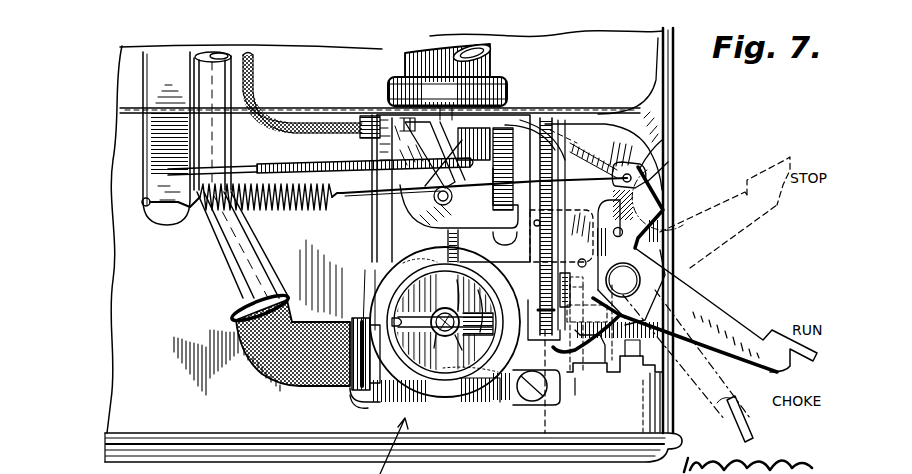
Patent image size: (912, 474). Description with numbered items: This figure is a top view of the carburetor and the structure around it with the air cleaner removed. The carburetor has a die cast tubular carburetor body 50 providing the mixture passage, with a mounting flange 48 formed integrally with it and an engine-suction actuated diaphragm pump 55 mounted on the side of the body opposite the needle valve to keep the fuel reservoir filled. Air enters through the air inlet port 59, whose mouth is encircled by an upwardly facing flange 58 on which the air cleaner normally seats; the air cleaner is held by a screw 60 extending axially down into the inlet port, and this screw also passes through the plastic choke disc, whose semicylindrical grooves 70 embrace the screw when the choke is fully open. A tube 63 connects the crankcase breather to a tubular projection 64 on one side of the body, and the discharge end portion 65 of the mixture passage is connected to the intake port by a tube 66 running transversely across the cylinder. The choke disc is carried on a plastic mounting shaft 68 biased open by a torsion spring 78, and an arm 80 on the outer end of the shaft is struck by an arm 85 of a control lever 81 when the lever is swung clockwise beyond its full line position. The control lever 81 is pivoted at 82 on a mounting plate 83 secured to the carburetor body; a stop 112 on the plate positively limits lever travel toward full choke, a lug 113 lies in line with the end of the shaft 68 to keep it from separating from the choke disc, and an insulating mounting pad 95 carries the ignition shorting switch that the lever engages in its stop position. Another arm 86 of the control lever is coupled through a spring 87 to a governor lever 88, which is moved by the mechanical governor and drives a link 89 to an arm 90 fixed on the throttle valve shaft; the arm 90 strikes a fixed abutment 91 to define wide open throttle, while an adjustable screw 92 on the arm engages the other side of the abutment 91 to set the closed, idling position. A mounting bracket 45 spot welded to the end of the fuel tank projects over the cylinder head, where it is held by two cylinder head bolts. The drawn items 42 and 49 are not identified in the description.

The engine housing 42 is at (140, 368).
The mounting bracket 45 is at (672, 98).
The carburetor mounting flange 48 is at (497, 397).
The bracket 49 is at (350, 393).
The carburetor body 50 is at (538, 245).
The diaphragm pump 55 is at (366, 210).
The flange 58 is at (446, 398).
The air inlet port 59 is at (347, 311).
The screw 60 is at (448, 335).
The tube 63 is at (208, 55).
The tubular projection 64 is at (362, 400).
The discharge end portion 65 is at (506, 92).
The tube 66 is at (490, 60).
The mounting shaft 68 is at (482, 292).
The semicylindrical grooves 70 is at (457, 280).
The torsion spring 78 is at (540, 300).
The arm 80 is at (552, 268).
The control lever 81 is at (720, 308).
The pivot 82 is at (637, 280).
The mounting plate 83 is at (648, 152).
The arm 85 is at (575, 370).
The arm 86 is at (660, 168).
The spring 87 is at (262, 215).
The lever 88 is at (150, 78).
The link 89 is at (244, 160).
The arm 90 is at (525, 148).
The fixed abutment 91 is at (450, 106).
The screw 92 is at (595, 188).
The insulating mounting pad 95 is at (607, 375).
The stop 112 is at (648, 375).
The lug 113 is at (580, 380).